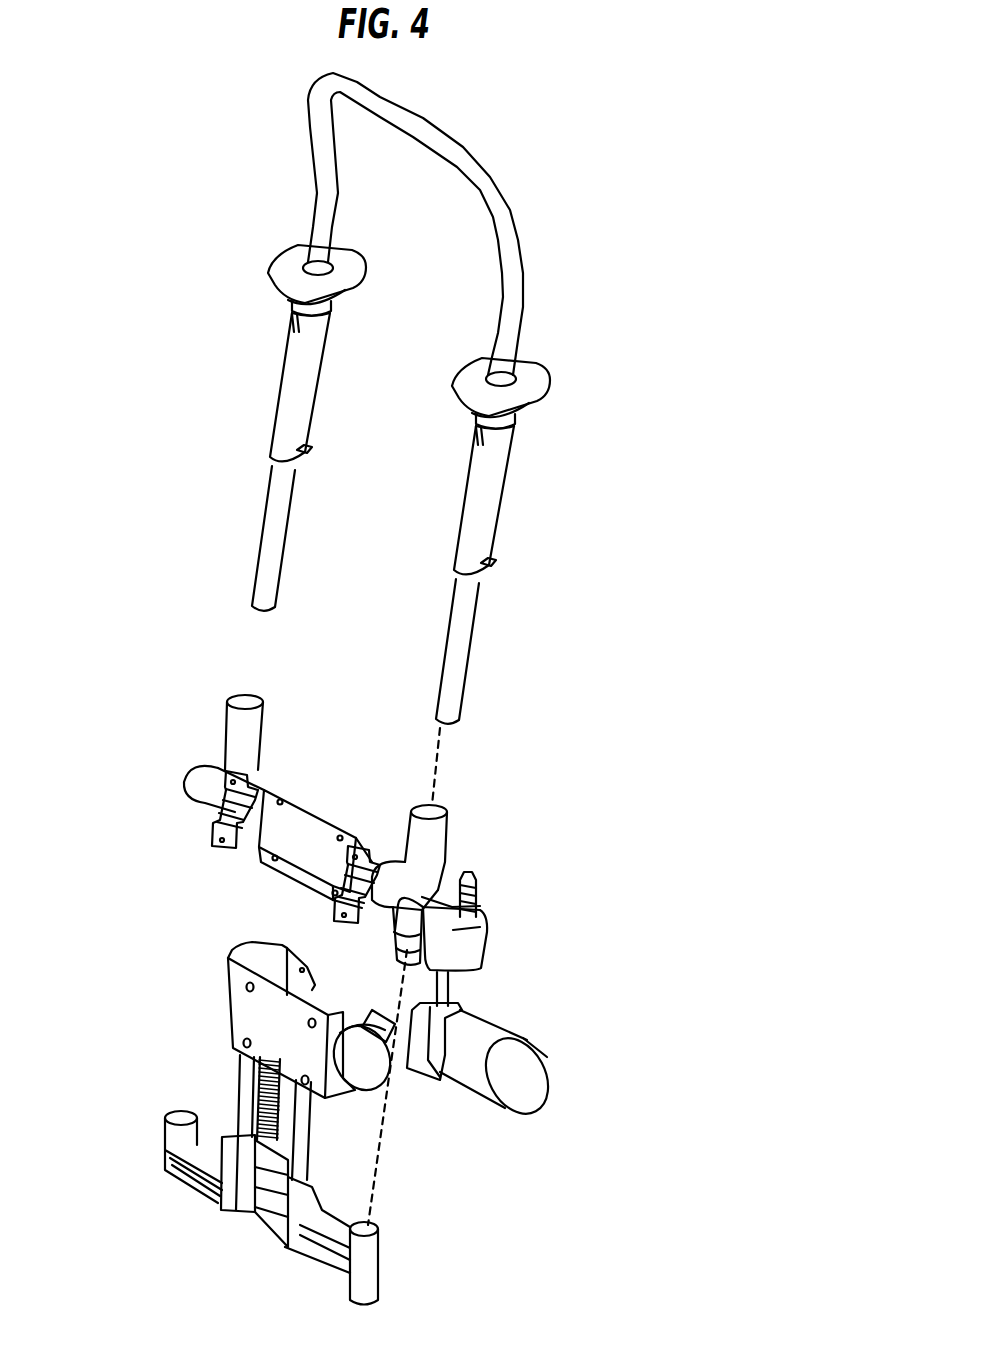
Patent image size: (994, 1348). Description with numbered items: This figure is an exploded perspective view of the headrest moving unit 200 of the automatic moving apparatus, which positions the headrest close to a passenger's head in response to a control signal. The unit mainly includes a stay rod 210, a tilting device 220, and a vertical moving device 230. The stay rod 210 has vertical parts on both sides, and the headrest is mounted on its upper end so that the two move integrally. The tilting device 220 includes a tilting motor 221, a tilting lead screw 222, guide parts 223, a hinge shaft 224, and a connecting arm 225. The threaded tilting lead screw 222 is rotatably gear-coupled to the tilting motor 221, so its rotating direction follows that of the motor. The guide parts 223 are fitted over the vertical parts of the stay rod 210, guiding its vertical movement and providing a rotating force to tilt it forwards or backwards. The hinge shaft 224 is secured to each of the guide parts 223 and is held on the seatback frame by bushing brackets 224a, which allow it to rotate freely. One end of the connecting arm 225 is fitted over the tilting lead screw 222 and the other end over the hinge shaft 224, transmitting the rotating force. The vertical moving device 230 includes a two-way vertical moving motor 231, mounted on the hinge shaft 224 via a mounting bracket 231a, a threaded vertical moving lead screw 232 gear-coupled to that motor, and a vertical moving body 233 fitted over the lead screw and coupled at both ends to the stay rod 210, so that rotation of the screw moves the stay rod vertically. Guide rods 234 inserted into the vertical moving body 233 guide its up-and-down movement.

The headrest moving unit 200 is at (488, 896).
The stay rod 210 is at (427, 130).
The tilting device 220 is at (545, 1042).
The tilting motor 221 is at (540, 1110).
The tilting lead screw 222 is at (453, 990).
The guide parts 223 is at (291, 319).
The hinge shaft 224 is at (385, 903).
The bushing brackets 224a is at (212, 827).
The connecting arm 225 is at (488, 946).
The vertical moving device 230 is at (214, 1017).
The vertical moving motor 231 is at (378, 1067).
The mounting bracket 231a is at (228, 960).
The vertical moving lead screw 232 is at (225, 1212).
The vertical moving body 233 is at (257, 1210).
The guide rods 234 is at (230, 1083).